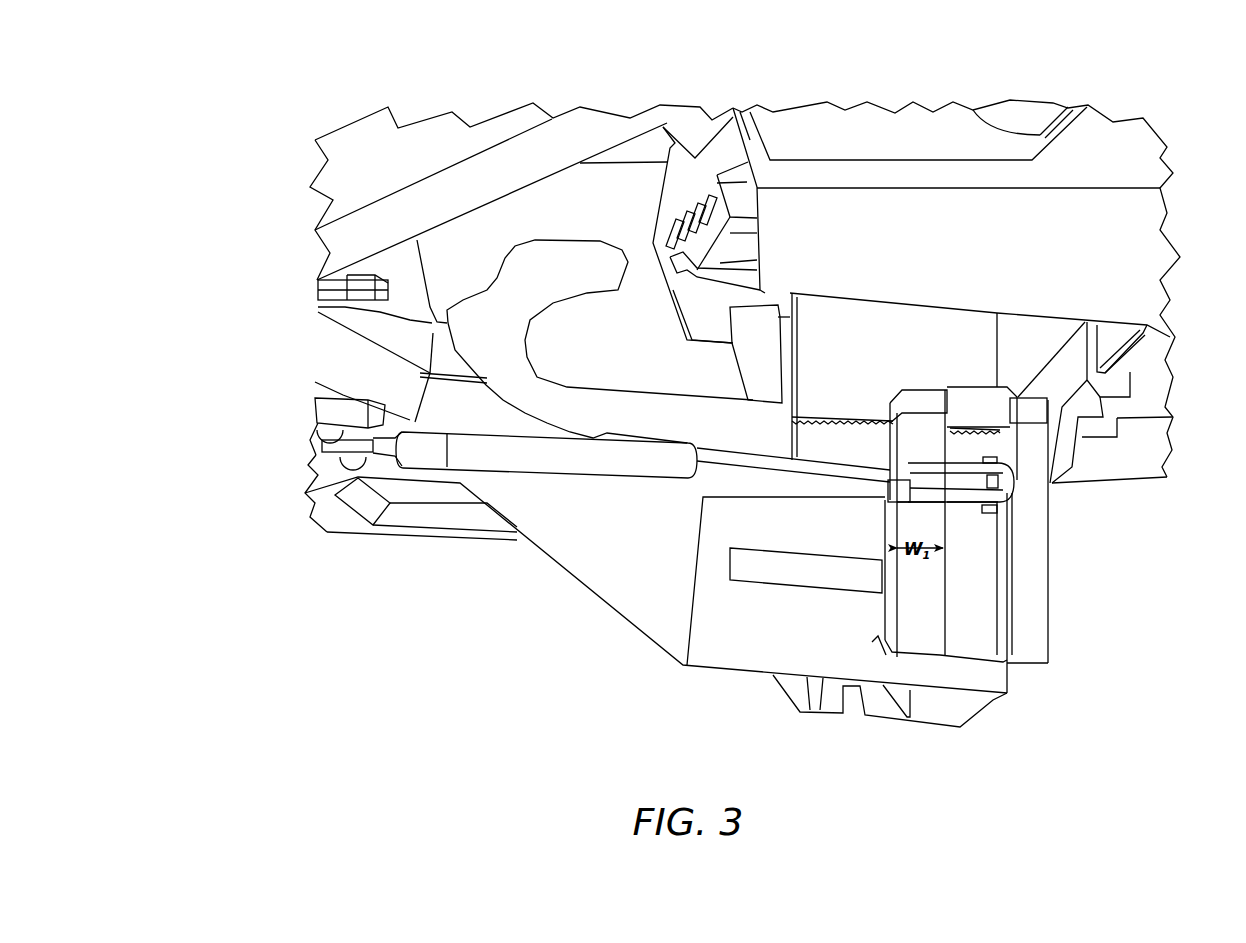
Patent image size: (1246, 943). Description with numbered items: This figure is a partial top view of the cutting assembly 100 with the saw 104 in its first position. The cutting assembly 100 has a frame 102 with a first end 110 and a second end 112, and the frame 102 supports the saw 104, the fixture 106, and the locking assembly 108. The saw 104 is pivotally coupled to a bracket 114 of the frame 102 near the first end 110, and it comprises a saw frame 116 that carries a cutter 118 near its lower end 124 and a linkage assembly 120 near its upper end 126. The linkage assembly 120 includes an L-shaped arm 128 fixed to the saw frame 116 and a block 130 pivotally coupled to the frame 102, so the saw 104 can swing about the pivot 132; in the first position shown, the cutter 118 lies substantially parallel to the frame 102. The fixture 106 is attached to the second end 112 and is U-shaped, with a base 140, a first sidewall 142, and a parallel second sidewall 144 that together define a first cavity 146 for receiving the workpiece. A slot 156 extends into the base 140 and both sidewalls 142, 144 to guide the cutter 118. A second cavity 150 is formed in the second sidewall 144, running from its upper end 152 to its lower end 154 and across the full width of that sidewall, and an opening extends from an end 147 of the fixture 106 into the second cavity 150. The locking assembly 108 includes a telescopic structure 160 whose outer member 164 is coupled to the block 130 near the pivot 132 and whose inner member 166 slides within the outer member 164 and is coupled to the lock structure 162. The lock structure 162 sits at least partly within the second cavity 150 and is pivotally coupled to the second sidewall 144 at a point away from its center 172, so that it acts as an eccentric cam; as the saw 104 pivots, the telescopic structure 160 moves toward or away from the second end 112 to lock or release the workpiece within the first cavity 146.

The cutting assembly 100 is at (247, 134).
The frame 102 is at (640, 637).
The saw 104 is at (1140, 148).
The fixture 106 is at (1032, 548).
The locking assembly 108 is at (449, 470).
The first end 110 is at (330, 483).
The second end 112 is at (967, 678).
The bracket 114 is at (377, 327).
The saw frame 116 is at (750, 138).
The cutter 118 is at (826, 418).
The linkage assembly 120 is at (450, 178).
The lower end 124 is at (1130, 475).
The upper end 126 is at (810, 143).
The arm 128 is at (563, 143).
The block 130 is at (350, 373).
The pivot 132 is at (363, 282).
The base 140 is at (973, 643).
The first sidewall 142 is at (1050, 587).
The second sidewall 144 is at (877, 640).
The first cavity 146 is at (980, 604).
The end 147 is at (937, 388).
The second cavity 150 is at (890, 491).
The upper end 152 is at (920, 613).
The lower end 154 is at (877, 610).
The slot 156 is at (913, 412).
The telescopic structure 160 is at (578, 468).
The lock structure 162 is at (1020, 487).
The outer member 164 is at (513, 467).
The inner member 166 is at (862, 477).
The center 172 is at (962, 505).